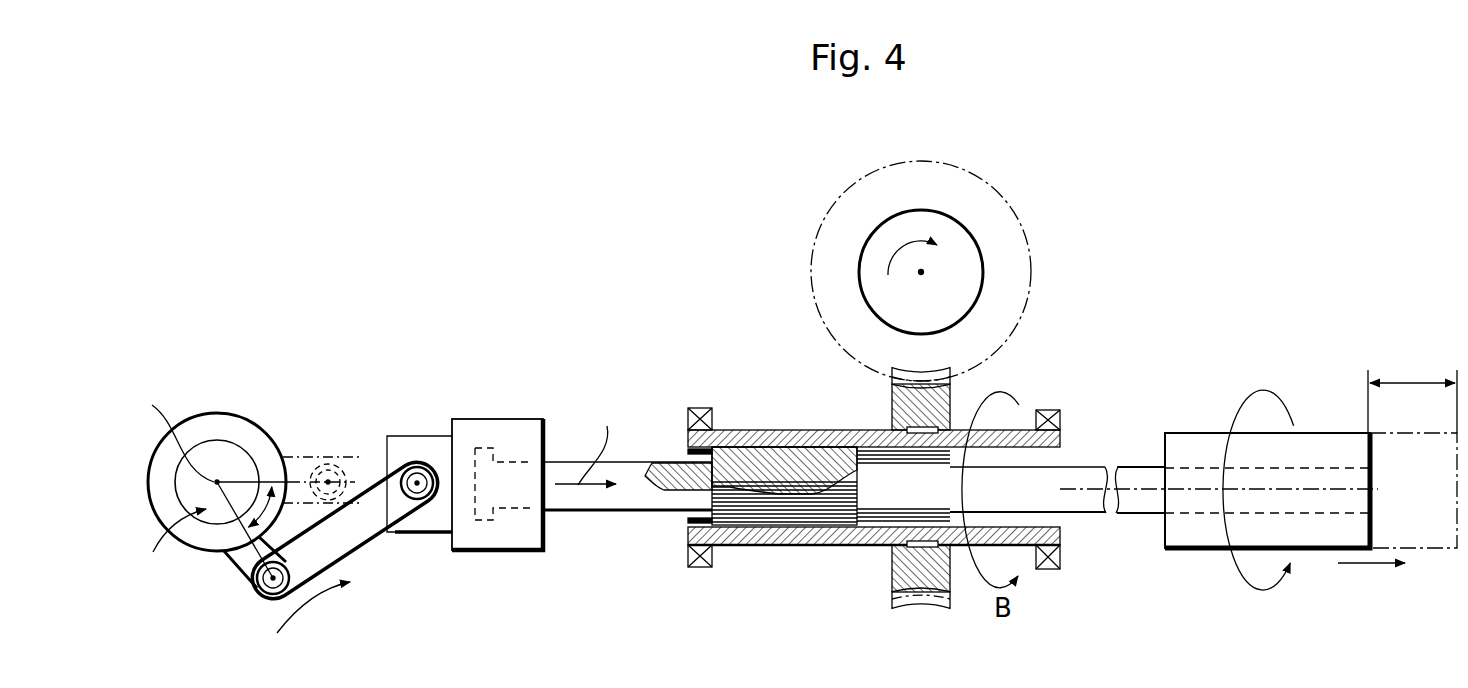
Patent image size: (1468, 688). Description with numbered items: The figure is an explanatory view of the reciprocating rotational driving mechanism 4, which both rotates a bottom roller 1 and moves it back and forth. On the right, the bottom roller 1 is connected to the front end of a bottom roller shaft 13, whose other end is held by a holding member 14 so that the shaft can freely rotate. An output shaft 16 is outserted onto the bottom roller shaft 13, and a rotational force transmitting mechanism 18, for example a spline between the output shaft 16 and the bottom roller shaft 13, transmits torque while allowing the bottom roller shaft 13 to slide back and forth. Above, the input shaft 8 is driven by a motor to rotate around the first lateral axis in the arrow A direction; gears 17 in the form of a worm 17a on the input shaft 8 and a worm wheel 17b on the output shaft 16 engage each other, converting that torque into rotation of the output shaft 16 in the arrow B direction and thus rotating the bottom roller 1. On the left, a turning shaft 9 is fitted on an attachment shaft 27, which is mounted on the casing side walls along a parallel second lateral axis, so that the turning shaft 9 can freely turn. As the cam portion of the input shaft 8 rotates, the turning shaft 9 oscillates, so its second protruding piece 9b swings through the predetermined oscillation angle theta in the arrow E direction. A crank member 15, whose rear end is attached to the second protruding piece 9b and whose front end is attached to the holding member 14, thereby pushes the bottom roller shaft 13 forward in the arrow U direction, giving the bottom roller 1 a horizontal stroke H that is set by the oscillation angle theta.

The bottom roller 1 is at (1327, 430).
The reciprocating rotational driving mechanism 4 is at (1110, 265).
The input shaft 8 is at (951, 215).
The turning shaft 9 is at (229, 410).
The second protruding piece 9b is at (299, 455).
The bottom roller shaft 13 is at (620, 506).
The holding member 14 is at (495, 420).
The crank member 15 is at (347, 548).
The output shaft 16 is at (772, 549).
The gear 17 is at (827, 384).
The worm 17a is at (806, 283).
The worm wheel 17b is at (889, 410).
The rotational force transmitting mechanism 18 is at (825, 522).
The attachment shaft 27 is at (170, 552).